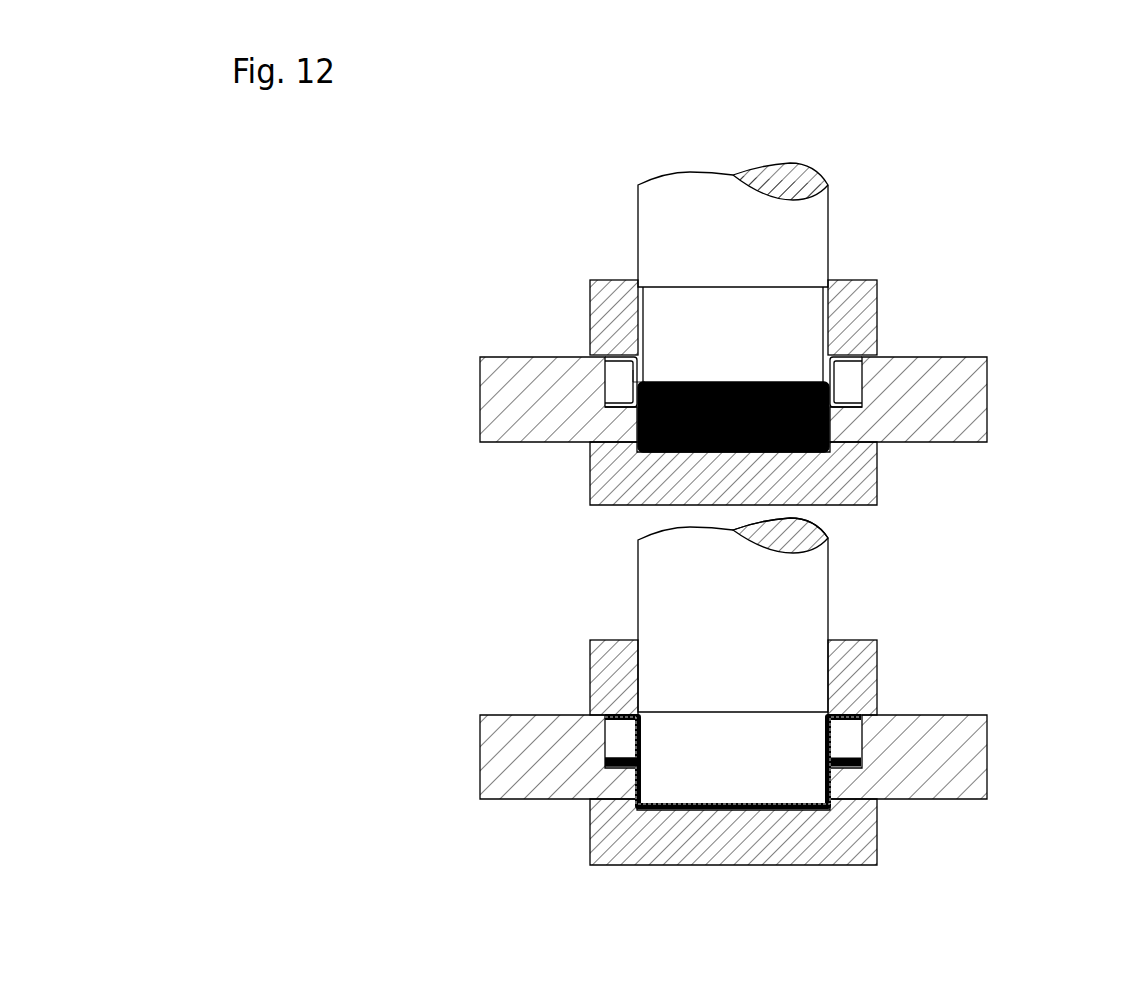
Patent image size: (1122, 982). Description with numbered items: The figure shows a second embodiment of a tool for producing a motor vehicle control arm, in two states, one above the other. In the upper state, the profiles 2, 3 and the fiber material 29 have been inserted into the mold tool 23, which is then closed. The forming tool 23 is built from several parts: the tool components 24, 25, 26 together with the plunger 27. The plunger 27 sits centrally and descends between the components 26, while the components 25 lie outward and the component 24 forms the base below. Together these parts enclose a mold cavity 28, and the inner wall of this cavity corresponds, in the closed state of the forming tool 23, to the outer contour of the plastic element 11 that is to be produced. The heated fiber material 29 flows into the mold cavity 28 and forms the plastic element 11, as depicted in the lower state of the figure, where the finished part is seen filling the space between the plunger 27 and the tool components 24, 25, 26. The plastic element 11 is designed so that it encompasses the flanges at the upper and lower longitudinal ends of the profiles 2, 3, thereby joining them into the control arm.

The mold tool 23 is at (463, 272).
The plunger 27 is at (758, 230).
The tool component 26 is at (848, 318).
The tool component 25 is at (920, 402).
The tool component 24 is at (613, 475).
The profile 2 is at (608, 398).
The fiber material 29 is at (641, 378).
The profile 3 is at (853, 412).
The plastic element 11 is at (840, 752).
The mold cavity 28 is at (610, 772).